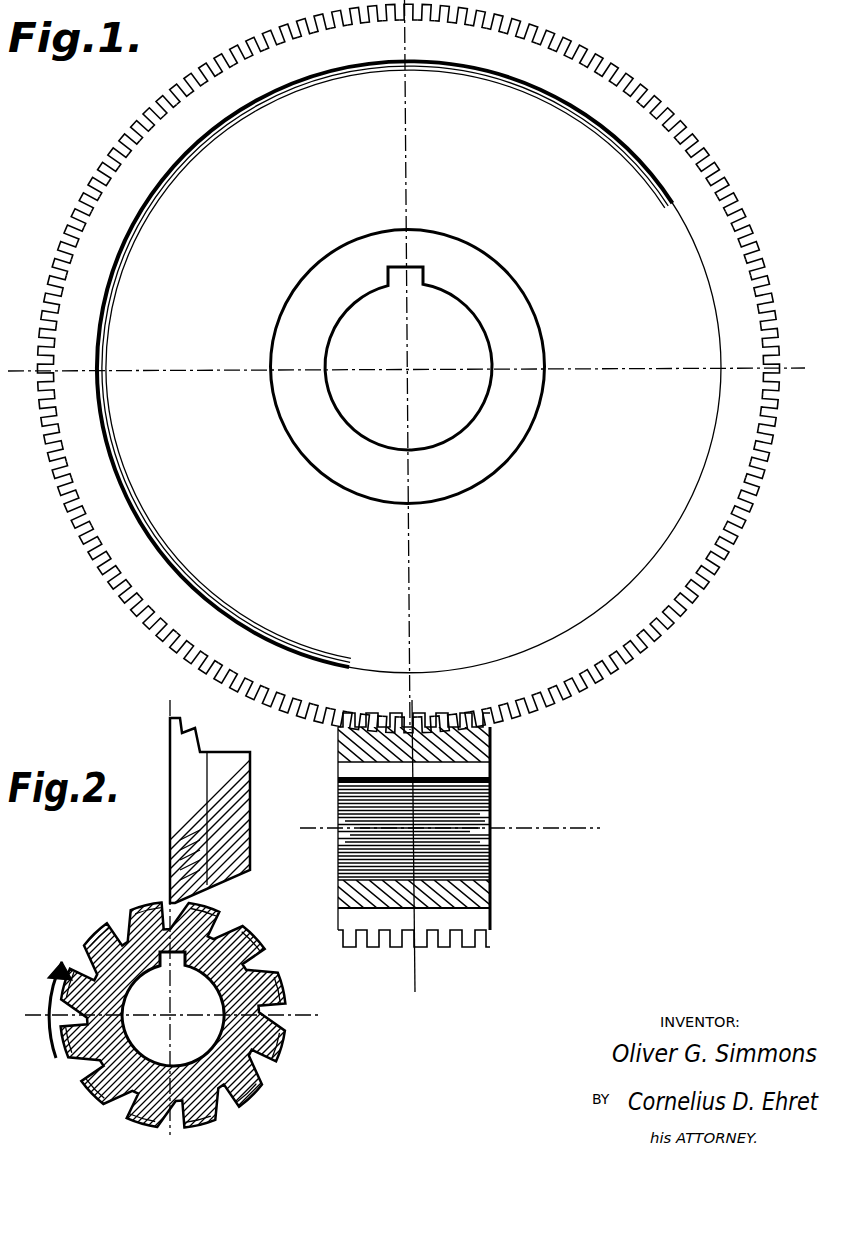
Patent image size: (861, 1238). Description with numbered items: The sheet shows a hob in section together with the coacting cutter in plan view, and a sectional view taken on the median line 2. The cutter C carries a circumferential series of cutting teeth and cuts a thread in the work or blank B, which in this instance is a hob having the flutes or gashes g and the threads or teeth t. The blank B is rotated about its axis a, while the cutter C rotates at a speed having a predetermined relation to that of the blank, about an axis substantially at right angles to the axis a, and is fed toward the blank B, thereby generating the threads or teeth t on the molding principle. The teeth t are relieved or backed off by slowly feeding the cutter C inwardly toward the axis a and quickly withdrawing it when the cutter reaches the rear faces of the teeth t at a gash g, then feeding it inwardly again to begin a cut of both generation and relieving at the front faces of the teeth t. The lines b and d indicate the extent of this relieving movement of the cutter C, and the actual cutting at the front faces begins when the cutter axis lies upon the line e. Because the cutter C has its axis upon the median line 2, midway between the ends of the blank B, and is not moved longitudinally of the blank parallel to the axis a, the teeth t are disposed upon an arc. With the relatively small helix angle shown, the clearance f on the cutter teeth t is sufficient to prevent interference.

In FIG. 1, the cutter C is at (408, 377).
In FIG. 2, the cutter C is at (232, 806).
In FIG. 1, the line e is at (737, 213).
In FIG. 2, the line e is at (172, 905).
In FIG. 1, the line b is at (572, 362).
In FIG. 1, the line d is at (572, 372).
In FIG. 1, the median line 2 is at (805, 362).
In FIG. 1, the blank B is at (448, 792).
In FIG. 2, the blank B is at (275, 968).
In FIG. 1, the threads or teeth t is at (405, 714).
In FIG. 2, the threads or teeth t is at (113, 945).
In FIG. 1, the flutes or gashes g is at (476, 915).
In FIG. 2, the flutes or gashes g is at (101, 935).
In FIG. 1, the axis a is at (548, 828).
In FIG. 2, the clearance f is at (200, 925).